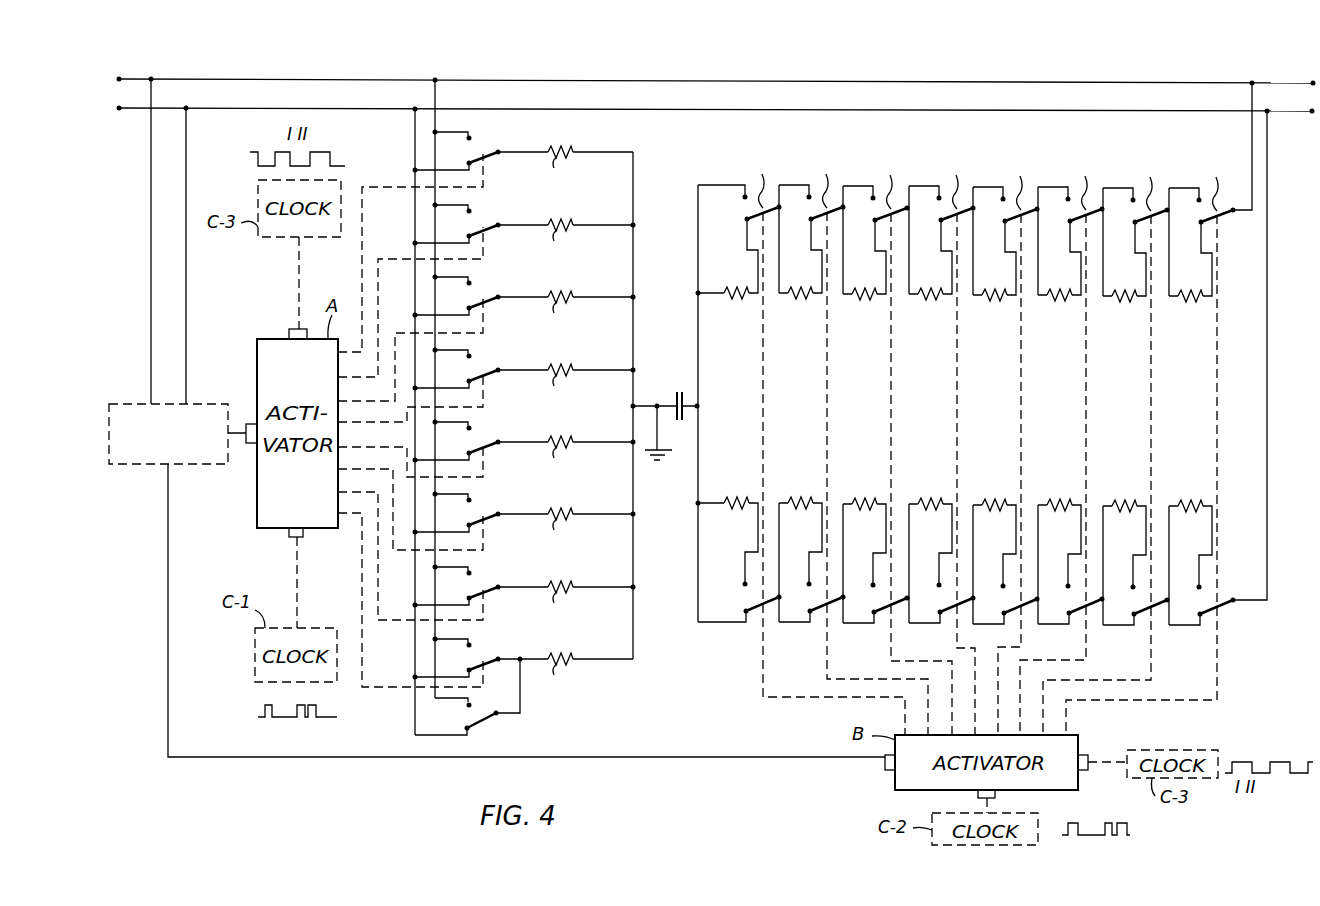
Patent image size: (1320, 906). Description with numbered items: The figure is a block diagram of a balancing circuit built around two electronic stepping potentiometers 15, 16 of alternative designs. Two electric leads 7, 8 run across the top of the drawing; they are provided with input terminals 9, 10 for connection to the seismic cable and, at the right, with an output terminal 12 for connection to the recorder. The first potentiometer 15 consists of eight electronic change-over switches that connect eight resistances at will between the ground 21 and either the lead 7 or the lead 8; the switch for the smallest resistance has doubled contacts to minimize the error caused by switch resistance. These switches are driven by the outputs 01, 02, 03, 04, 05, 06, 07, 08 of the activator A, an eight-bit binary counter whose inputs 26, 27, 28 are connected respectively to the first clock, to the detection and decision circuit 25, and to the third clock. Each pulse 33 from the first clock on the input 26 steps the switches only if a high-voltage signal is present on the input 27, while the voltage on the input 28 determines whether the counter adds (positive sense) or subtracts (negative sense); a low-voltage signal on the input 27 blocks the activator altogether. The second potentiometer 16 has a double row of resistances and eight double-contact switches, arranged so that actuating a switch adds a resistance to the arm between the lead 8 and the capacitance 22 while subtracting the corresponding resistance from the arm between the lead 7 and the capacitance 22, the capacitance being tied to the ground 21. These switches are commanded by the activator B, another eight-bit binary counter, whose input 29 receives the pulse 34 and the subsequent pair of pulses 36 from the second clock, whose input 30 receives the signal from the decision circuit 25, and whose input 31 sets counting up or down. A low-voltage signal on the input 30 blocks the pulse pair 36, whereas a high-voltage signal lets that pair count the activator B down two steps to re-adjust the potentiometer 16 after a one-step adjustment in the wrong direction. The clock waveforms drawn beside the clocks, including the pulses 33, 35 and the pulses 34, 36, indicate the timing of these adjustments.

The electric lead 7 is at (771, 83).
The electric lead 8 is at (777, 110).
The input terminal 9 is at (120, 80).
The input terminal 10 is at (120, 110).
The output terminal 12 is at (1311, 114).
The potentiometer 15 is at (647, 182).
The potentiometer 16 is at (1035, 138).
The ground 21 is at (660, 462).
The capacitance 22 is at (677, 397).
The detection and decision circuit 25 is at (130, 404).
The input of activator A 26 is at (290, 537).
The input of activator A 27 is at (246, 424).
The input of activator A 28 is at (291, 329).
The input of activator B 29 is at (995, 795).
The input of activator B 30 is at (885, 770).
The input of activator B 31 is at (1088, 758).
The pulse 33 is at (266, 722).
The pulse 34 is at (1072, 822).
The clock pulses 35 is at (311, 722).
The pair of pulses 36 is at (1115, 821).
The output of activator A 01 is at (385, 187).
The output of activator A 02 is at (385, 259).
The output of activator A 03 is at (395, 333).
The output of activator A 04 is at (357, 422).
The output of activator A 05 is at (357, 447).
The output of activator A 06 is at (401, 550).
The output of activator A 07 is at (389, 620).
The output of activator A 08 is at (386, 687).